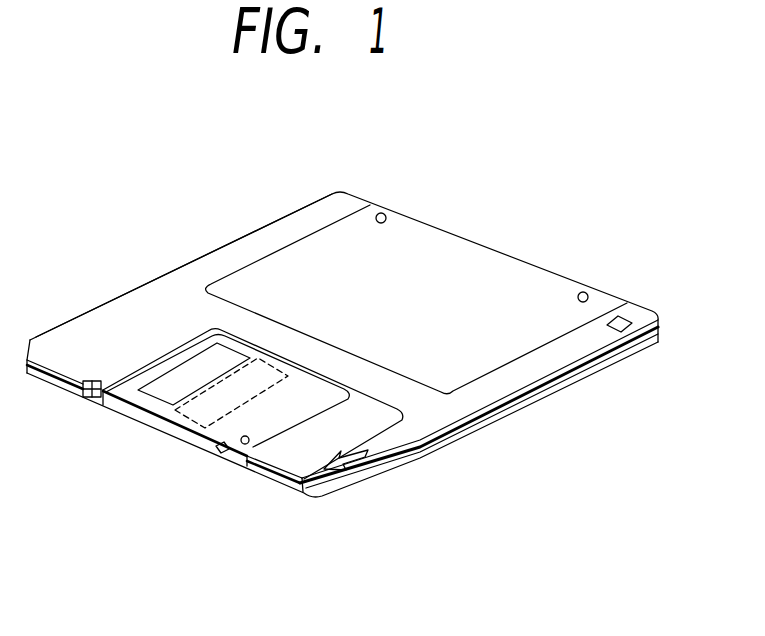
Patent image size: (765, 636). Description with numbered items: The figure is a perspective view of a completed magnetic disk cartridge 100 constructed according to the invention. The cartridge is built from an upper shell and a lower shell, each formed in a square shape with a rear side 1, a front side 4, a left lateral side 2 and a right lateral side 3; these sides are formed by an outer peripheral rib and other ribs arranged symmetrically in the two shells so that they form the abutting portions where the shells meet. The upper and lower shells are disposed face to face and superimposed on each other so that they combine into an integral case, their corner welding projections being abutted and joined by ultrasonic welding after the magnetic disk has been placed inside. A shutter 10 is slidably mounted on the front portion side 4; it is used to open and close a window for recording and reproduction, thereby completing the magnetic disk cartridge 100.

The magnetic disk cartridge 100 is at (425, 203).
The rear side 1 is at (528, 258).
The left lateral side 2 is at (516, 416).
The right lateral side 3 is at (172, 270).
The front side 4 is at (88, 399).
The shutter 10 is at (234, 417).